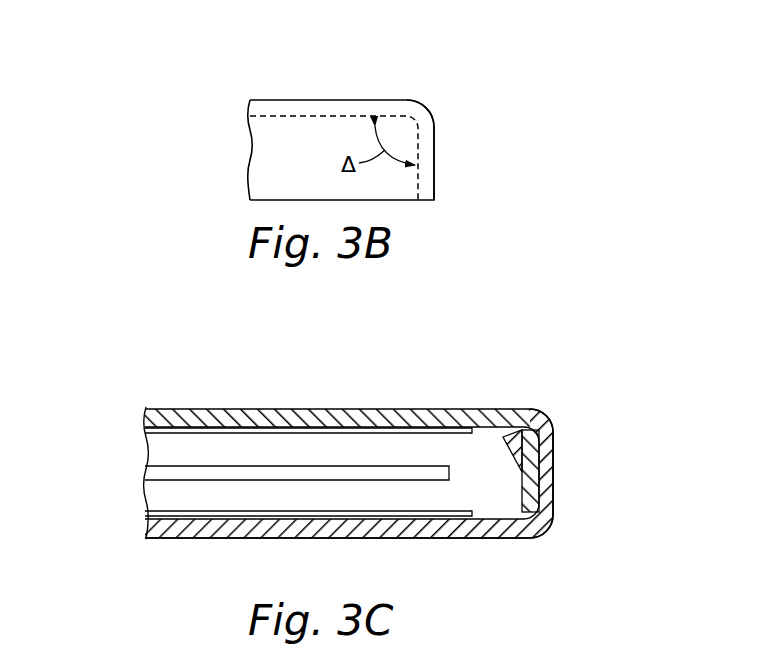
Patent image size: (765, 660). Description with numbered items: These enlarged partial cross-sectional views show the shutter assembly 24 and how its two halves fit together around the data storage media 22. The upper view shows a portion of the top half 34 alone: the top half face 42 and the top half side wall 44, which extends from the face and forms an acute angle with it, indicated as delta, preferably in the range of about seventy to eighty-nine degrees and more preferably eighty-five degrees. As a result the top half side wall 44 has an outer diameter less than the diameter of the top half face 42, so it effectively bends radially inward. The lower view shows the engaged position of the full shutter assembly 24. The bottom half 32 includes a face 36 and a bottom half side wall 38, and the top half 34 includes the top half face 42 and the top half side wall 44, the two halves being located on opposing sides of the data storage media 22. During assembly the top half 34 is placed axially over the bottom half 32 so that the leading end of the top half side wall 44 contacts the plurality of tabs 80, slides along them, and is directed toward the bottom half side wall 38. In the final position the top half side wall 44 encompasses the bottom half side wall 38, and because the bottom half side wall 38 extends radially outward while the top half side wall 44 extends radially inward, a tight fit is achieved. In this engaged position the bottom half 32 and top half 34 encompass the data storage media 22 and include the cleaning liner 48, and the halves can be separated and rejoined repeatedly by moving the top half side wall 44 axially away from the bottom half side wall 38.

In FIG. 3C, the shutter assembly 24 is at (331, 456).
In FIG. 3C, the data storage media 22 is at (400, 470).
In FIG. 3C, the bottom half 32 is at (401, 541).
In FIG. 3B, the top half 34 is at (296, 83).
In FIG. 3C, the top half 34 is at (230, 406).
In FIG. 3C, the face 36 is at (326, 528).
In FIG. 3C, the bottom half side wall 38 is at (530, 476).
In FIG. 3B, the top half face 42 is at (340, 123).
In FIG. 3C, the top half face 42 is at (318, 419).
In FIG. 3B, the top half side wall 44 is at (432, 158).
In FIG. 3C, the top half side wall 44 is at (551, 461).
In FIG. 3C, the cleaning liner 48 is at (175, 432).
In FIG. 3C, the tabs 80 is at (511, 440).